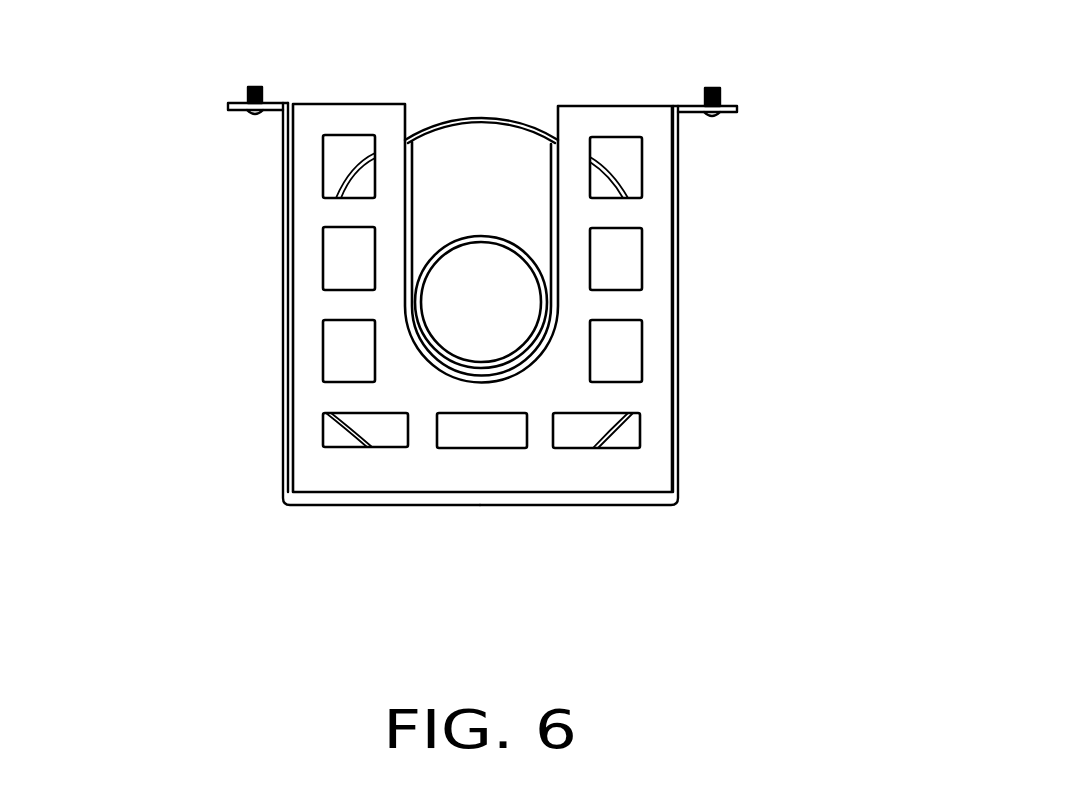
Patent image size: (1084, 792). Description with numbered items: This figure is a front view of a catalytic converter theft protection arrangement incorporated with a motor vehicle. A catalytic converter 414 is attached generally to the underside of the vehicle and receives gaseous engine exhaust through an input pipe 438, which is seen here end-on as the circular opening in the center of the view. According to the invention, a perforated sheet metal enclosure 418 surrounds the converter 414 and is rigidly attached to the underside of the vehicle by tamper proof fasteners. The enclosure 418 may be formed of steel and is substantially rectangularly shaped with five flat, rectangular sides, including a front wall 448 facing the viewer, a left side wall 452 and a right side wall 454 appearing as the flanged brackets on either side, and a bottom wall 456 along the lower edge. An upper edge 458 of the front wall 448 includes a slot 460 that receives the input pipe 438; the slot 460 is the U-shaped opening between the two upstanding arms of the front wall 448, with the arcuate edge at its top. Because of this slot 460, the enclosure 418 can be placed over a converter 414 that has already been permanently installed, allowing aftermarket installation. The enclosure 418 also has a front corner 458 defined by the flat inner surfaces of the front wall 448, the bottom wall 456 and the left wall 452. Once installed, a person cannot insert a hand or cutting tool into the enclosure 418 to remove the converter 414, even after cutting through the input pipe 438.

The catalytic converter 414 is at (512, 173).
The perforated sheet metal enclosure 418 is at (377, 477).
The input pipe 438 is at (527, 258).
The front wall 448 is at (548, 472).
The left side wall 452 is at (680, 295).
The right side wall 454 is at (280, 303).
The bottom wall 456 is at (447, 503).
The upper edge 458 is at (355, 104).
The slot 460 is at (480, 117).